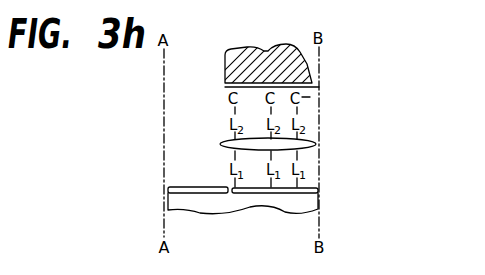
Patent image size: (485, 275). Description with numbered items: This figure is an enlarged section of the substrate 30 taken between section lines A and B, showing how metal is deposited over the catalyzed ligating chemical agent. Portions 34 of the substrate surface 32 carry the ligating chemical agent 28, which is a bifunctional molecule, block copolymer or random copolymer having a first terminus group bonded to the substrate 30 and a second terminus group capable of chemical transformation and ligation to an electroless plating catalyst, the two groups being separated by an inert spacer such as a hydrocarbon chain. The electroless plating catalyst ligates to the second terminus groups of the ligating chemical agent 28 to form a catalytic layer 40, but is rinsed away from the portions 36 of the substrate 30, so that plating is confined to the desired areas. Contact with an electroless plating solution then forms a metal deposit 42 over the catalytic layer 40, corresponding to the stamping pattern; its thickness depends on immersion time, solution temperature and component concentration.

The ligating chemical agent 28 is at (316, 144).
The substrate 30 is at (174, 199).
The substrate surface 32 is at (185, 187).
The portions of substrate surface 34 is at (278, 193).
The portions of substrate 36 is at (200, 193).
The catalytic layer 40 is at (319, 87).
The metal deposit 42 is at (312, 62).